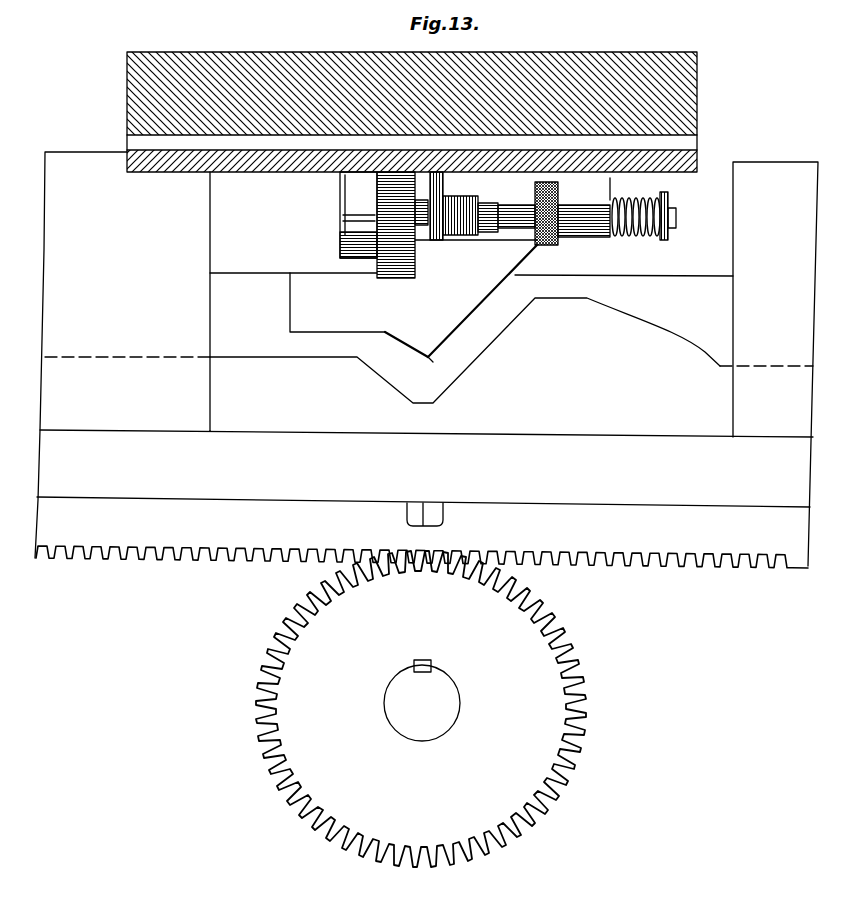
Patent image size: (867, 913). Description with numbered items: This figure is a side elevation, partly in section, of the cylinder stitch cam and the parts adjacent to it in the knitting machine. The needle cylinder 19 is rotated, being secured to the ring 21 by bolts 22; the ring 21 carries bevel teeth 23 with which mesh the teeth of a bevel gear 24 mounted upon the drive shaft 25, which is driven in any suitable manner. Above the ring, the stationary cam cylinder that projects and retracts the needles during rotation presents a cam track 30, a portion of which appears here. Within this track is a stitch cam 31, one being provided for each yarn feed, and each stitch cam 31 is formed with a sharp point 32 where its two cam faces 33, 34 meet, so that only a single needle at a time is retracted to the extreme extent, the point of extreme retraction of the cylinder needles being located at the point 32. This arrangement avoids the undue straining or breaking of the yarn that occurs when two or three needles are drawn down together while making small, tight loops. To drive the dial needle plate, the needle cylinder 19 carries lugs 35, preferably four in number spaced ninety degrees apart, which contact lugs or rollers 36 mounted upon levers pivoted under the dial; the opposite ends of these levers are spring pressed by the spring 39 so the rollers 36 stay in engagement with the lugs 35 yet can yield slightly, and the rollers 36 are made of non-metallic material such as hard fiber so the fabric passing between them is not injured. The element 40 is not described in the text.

The needle cylinder 19 is at (80, 160).
The ring 21 is at (640, 490).
The bolts 22 is at (446, 512).
The bevel teeth 23 is at (672, 562).
The bevel gear 24 is at (588, 706).
The drive shaft 25 is at (445, 702).
The cam track 30 is at (317, 348).
The stitch cam 31 is at (304, 278).
The sharp point 32 is at (432, 360).
The cam face 33 is at (463, 325).
The cam face 34 is at (403, 347).
The lugs 35 is at (432, 203).
The lugs or rollers 36 is at (416, 265).
The spring 39 is at (642, 233).
The platen 40 is at (317, 60).